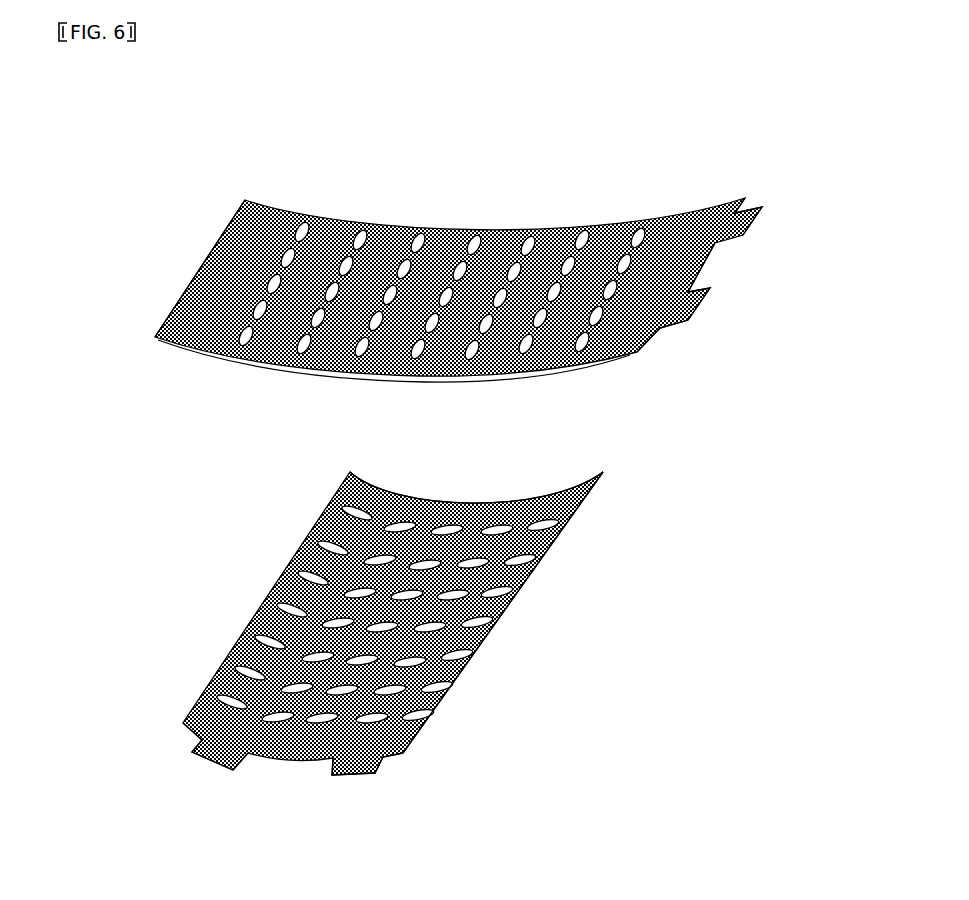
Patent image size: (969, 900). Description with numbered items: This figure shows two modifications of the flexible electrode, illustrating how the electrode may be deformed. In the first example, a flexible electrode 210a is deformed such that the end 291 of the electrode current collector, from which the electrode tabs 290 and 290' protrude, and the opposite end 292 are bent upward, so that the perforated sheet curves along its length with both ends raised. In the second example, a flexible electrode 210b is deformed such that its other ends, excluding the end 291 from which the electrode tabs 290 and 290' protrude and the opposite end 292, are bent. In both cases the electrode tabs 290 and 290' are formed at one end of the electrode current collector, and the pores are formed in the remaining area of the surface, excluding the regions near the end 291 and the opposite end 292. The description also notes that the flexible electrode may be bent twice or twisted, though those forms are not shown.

The flexible electrode 210a is at (315, 205).
The flexible electrode 210b is at (250, 578).
The electrode tab 290 is at (482, 544).
The electrode tab 290' is at (574, 526).
The end of the electrode current collector 291 is at (637, 352).
The opposite end of the electrode current collector 292 is at (173, 307).